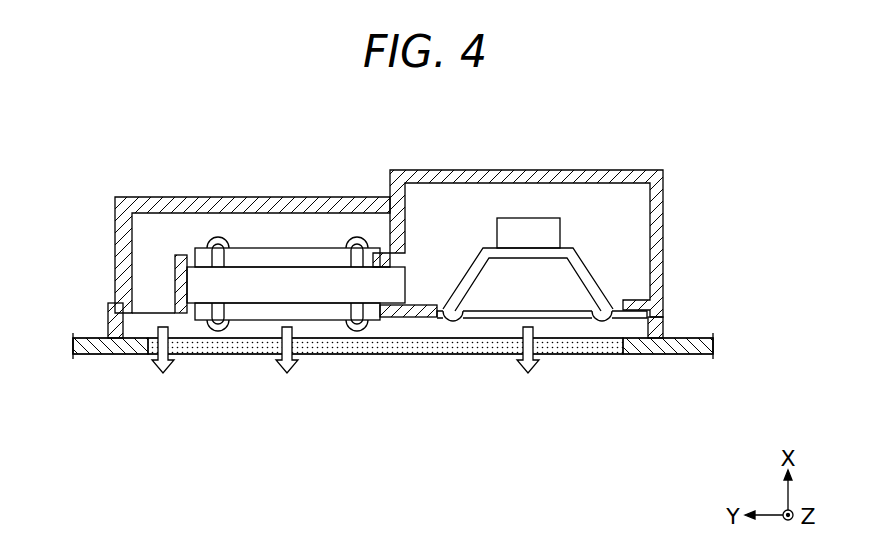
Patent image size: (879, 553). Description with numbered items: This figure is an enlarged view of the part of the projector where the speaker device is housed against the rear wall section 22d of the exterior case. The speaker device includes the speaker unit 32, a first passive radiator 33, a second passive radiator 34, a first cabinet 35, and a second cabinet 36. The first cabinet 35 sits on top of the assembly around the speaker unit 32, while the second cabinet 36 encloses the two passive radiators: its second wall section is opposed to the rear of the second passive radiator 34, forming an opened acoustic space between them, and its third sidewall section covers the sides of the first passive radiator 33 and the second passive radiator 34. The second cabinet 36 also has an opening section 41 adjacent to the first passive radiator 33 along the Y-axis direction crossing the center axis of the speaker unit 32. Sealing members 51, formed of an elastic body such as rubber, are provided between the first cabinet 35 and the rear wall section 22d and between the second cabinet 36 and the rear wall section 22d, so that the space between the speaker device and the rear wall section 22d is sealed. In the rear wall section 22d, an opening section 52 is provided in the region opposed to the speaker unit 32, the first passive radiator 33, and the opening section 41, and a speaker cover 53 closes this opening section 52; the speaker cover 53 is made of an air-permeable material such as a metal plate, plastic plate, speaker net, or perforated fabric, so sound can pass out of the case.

The second cabinet 36 is at (169, 204).
The second passive radiator 34 is at (298, 257).
The first cabinet 35 is at (467, 180).
The speaker unit 32 is at (528, 213).
The sealing member 51 is at (110, 331).
The opening section 41 is at (127, 353).
The first passive radiator 33 is at (252, 313).
The speaker cover 53 is at (387, 348).
The opening section 52 is at (439, 356).
The rear wall section 22d is at (680, 355).